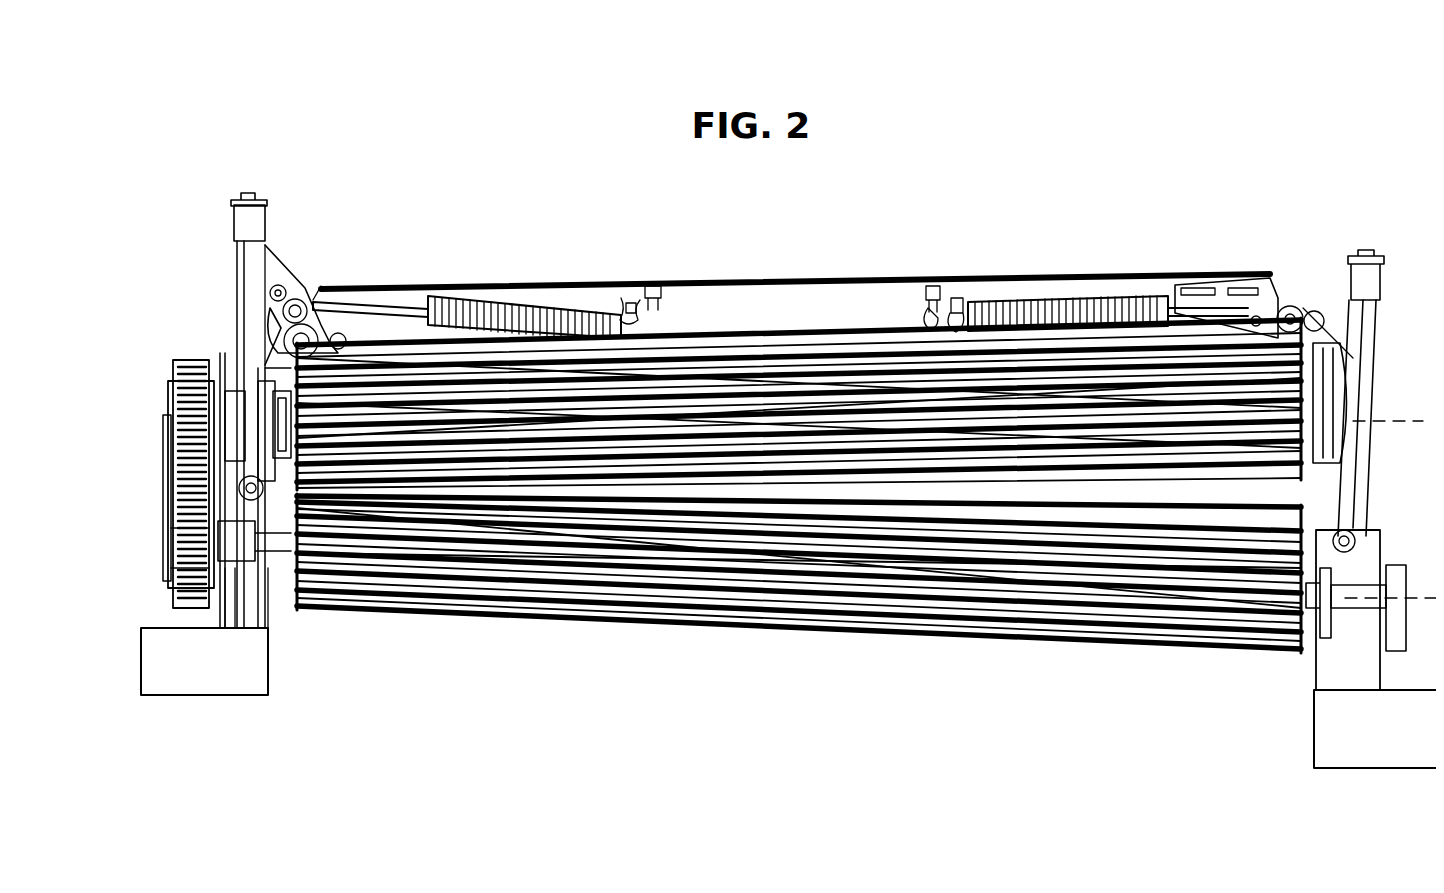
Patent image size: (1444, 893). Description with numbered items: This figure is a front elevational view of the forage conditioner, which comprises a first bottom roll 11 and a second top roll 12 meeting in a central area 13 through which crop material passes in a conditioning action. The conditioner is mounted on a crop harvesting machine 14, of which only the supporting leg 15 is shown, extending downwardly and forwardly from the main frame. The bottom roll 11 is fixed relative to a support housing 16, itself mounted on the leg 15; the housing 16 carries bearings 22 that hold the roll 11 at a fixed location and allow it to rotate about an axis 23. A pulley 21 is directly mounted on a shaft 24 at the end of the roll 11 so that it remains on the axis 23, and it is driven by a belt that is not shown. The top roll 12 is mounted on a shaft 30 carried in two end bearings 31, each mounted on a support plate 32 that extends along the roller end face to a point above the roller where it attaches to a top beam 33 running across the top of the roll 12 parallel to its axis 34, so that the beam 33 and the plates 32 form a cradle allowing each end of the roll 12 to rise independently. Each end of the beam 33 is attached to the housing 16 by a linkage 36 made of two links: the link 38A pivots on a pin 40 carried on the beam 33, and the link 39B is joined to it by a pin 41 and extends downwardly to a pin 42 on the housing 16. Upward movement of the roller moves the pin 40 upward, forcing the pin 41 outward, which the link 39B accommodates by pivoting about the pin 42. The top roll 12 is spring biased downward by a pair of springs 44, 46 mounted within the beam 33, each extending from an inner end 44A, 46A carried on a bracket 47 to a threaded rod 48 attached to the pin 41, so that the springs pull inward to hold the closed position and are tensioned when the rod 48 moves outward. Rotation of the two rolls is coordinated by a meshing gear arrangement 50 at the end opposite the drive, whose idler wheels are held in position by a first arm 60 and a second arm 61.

The first bottom roll 11 is at (690, 575).
The second top roll 12 is at (690, 390).
The central area 13 is at (830, 492).
The crop harvesting machine 14 is at (372, 667).
The supporting leg 15 is at (165, 675).
The support housing 16 is at (262, 615).
The pulley 21 is at (1380, 522).
The bearings 22 is at (228, 575).
The axis 23 is at (1415, 590).
The shaft 24 is at (1410, 600).
The shaft 30 is at (1272, 298).
The end bearings 31 is at (1300, 300).
The support plate 32 is at (1305, 455).
The top beam 33 is at (866, 298).
The axis 34 is at (1415, 413).
The linkage 36 is at (312, 237).
The link 38A is at (300, 290).
The link 39B is at (255, 258).
The pin 40 is at (350, 300).
The pin 41 is at (262, 290).
The pin 42 is at (228, 380).
The spring 44 is at (530, 310).
The inner end 44A is at (625, 292).
The spring 46 is at (1045, 300).
The inner end 46A is at (950, 295).
The bracket 47 is at (665, 270).
The threaded rod 48 is at (400, 295).
The meshing gear arrangement 50 is at (182, 320).
The first arm 60 is at (160, 540).
The second arm 61 is at (160, 410).